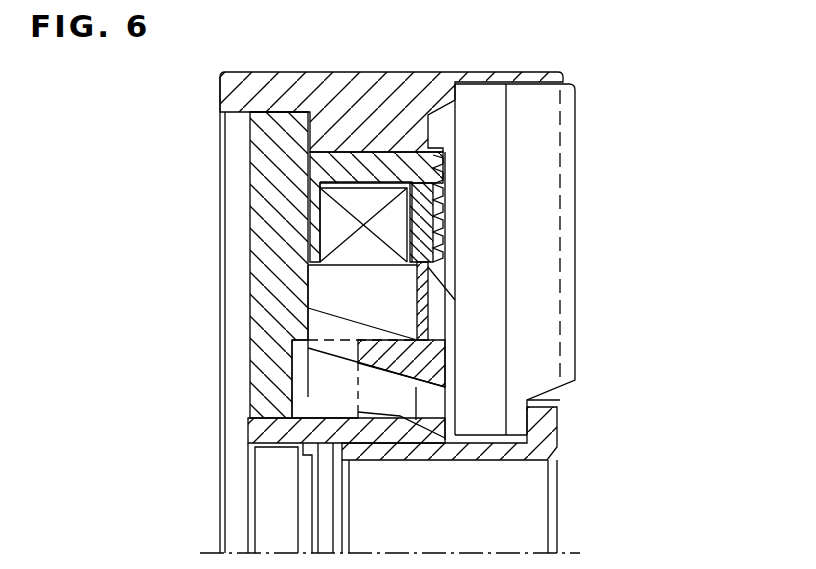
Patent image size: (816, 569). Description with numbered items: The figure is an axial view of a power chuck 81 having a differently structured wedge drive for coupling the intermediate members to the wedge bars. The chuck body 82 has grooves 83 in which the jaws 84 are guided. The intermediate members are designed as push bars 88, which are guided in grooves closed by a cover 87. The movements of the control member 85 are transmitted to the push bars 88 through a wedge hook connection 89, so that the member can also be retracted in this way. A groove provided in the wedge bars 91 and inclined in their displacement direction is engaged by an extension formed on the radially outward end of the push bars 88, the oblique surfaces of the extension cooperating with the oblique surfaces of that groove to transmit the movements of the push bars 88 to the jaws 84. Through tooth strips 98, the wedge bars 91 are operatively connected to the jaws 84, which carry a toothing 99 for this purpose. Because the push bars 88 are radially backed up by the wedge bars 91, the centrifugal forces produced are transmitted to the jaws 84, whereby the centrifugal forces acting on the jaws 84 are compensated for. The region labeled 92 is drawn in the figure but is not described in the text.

The chuck 81 is at (187, 334).
The chuck body 82 is at (337, 68).
The grooves 83 is at (455, 80).
The jaws 84 is at (577, 104).
The control member 85 is at (267, 432).
The cover 87 is at (272, 215).
The push bars 88 is at (328, 282).
The wedge hook connection 89 is at (425, 408).
The wedge bars 91 is at (337, 165).
The gap 92 is at (272, 120).
The tooth strips 98 is at (443, 178).
The toothing 99 is at (435, 210).